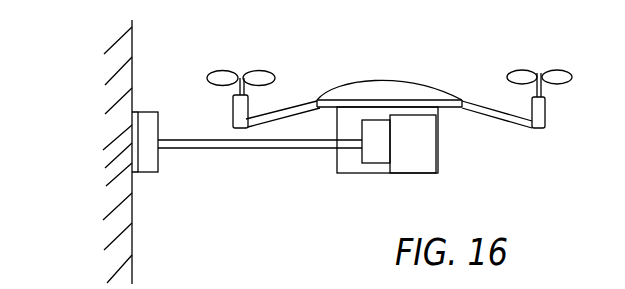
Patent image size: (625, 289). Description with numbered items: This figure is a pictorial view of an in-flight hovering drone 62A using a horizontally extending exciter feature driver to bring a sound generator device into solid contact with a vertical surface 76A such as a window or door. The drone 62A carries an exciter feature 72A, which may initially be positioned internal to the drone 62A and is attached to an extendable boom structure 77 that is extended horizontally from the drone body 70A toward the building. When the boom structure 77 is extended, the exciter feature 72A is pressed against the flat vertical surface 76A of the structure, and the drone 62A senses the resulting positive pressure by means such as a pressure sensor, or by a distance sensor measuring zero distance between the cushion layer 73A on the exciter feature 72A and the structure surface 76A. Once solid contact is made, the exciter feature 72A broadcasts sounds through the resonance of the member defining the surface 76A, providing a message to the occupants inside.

The vertical surface 76A is at (134, 58).
The cushion layer 73A is at (130, 150).
The exciter feature 72A is at (159, 175).
The extendable boom structure 77 is at (265, 149).
The docking housing 70A is at (330, 150).
The drone 62A is at (428, 74).